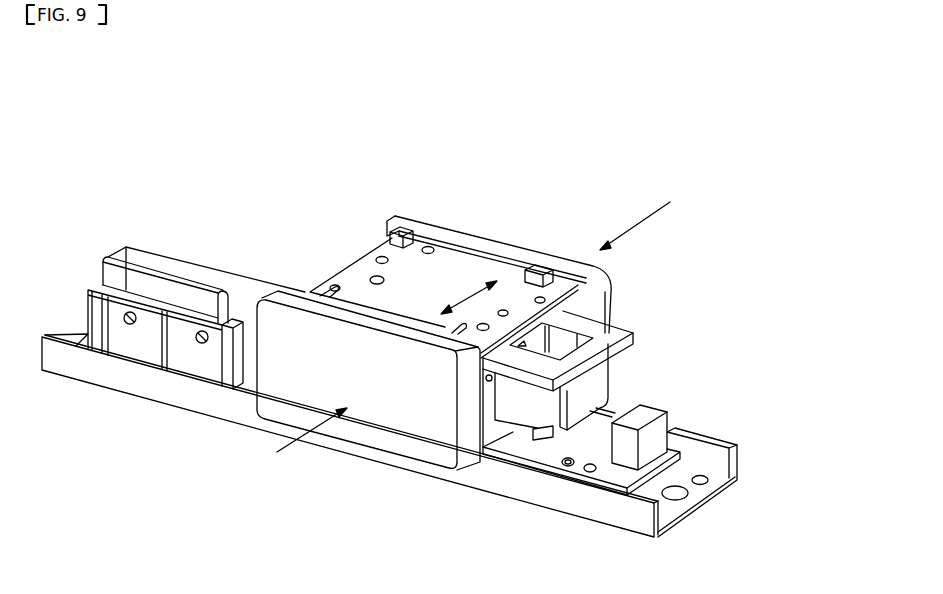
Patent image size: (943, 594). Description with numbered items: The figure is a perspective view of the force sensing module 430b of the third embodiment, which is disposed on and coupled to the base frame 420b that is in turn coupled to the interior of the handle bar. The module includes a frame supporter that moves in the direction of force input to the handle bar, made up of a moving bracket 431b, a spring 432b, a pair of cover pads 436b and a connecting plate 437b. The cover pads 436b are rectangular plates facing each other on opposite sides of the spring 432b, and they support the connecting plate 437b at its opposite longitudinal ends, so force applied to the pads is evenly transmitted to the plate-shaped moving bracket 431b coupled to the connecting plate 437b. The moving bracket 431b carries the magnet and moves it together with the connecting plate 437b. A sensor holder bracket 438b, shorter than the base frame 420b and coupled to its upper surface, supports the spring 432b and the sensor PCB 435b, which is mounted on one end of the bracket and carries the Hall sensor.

The force sensing module 430b is at (113, 92).
The base frame 420b is at (548, 489).
The moving bracket 431b is at (630, 320).
The spring 432b is at (232, 269).
The sensor PCB 435b is at (542, 457).
The cover pads 436b is at (403, 429).
The connecting plate 437b is at (466, 266).
The sensor holder bracket 438b is at (194, 351).